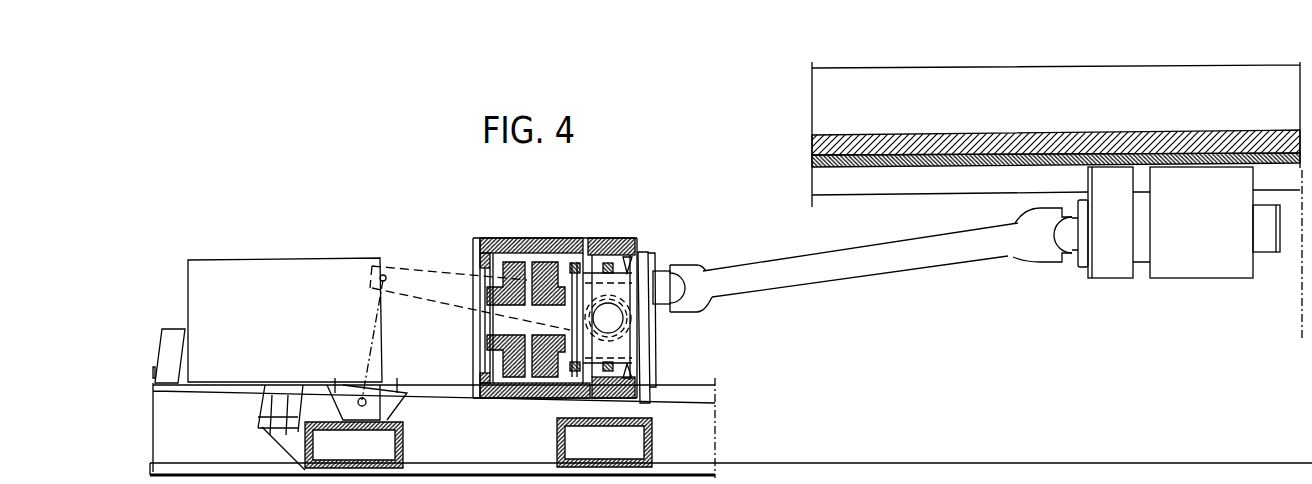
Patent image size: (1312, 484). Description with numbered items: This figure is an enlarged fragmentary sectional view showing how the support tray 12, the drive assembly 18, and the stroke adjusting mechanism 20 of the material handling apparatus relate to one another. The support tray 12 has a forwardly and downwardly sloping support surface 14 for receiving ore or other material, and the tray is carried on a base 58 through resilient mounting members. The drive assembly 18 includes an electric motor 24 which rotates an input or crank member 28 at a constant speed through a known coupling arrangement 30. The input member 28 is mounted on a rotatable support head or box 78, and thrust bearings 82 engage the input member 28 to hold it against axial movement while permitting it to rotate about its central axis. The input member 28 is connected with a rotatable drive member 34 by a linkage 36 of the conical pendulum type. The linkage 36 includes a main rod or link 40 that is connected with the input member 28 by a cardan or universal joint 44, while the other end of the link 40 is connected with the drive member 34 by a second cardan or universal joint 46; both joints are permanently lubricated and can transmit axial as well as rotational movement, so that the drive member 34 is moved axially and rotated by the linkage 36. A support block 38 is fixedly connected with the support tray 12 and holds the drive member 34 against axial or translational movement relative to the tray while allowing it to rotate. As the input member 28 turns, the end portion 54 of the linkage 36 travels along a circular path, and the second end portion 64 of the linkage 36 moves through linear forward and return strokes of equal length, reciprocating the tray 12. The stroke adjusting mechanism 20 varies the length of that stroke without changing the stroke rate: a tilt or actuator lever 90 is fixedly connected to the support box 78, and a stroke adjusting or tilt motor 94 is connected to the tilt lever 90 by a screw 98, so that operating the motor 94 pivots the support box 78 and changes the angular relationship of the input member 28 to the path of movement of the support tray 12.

The support tray 12 is at (930, 60).
The support surface 14 is at (1188, 130).
The drive assembly 18 is at (199, 236).
The stroke adjusting mechanism 20 is at (256, 418).
The electric motor 24 is at (310, 268).
The input member 28 is at (617, 350).
The coupling arrangement 30 is at (548, 262).
The drive member 34 is at (1070, 240).
The linkage 36 is at (778, 246).
The support block 38 is at (1185, 267).
The main rod 40 is at (893, 265).
The universal joint 44 is at (680, 268).
The second universal joint 46 is at (1037, 228).
The end portion of linkage 54 is at (682, 308).
The base 58 is at (688, 458).
The second end portion of linkage 64 is at (1060, 258).
The support box 78 is at (608, 240).
The thrust bearings 82 is at (567, 393).
The tilt lever 90 is at (383, 267).
The tilt motor 94 is at (165, 345).
The screw 98 is at (375, 333).